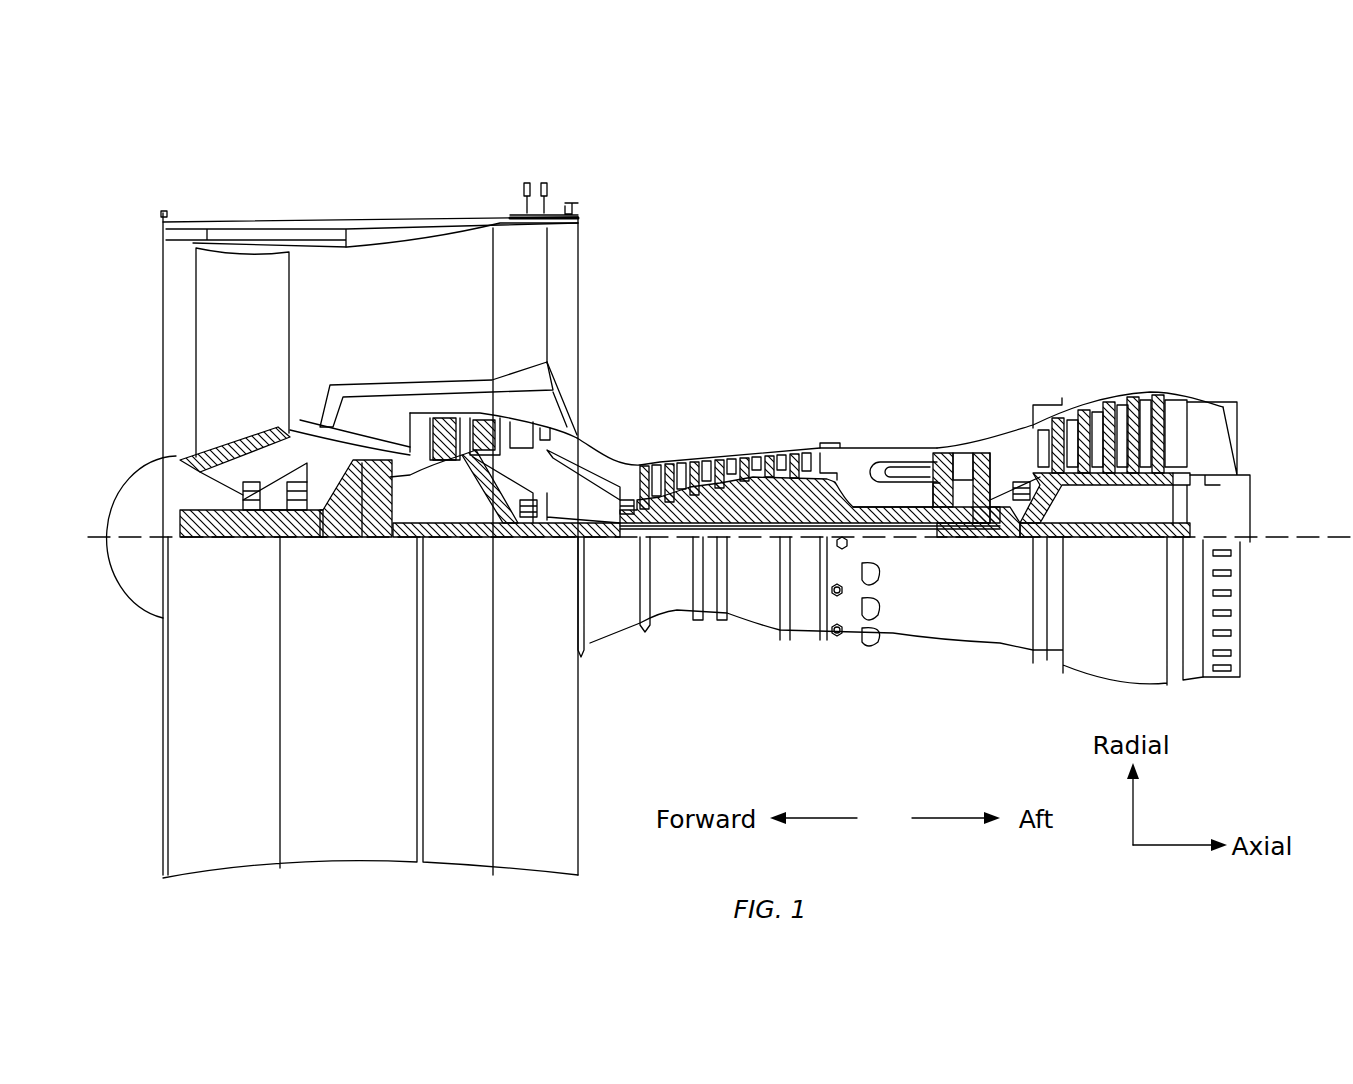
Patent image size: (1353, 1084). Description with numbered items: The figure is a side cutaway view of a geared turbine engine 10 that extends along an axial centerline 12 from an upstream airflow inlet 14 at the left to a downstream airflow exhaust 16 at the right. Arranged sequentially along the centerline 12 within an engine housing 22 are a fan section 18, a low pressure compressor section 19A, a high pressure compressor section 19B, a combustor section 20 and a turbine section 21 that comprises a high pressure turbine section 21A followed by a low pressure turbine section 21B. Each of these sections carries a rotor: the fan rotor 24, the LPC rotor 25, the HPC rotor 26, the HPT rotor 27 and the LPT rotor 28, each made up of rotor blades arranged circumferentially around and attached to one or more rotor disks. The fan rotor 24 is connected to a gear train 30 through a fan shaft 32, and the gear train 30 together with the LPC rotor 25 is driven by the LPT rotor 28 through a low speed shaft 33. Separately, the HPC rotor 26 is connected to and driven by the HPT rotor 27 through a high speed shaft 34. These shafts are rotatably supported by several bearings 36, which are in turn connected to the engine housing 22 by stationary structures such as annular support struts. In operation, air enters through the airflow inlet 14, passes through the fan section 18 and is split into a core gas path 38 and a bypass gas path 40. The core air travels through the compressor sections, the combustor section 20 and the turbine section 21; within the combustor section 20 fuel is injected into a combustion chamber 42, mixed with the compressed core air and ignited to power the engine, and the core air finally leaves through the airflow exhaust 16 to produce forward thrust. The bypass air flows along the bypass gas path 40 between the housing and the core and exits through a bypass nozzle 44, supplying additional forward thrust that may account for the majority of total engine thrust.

The geared turbine engine 10 is at (133, 203).
The axial centerline 12 is at (1300, 548).
The upstream airflow inlet 14 is at (163, 290).
The downstream airflow exhaust 16 is at (1240, 432).
The fan section 18 is at (337, 195).
The low pressure compressor (LPC) section 19A is at (580, 177).
The high pressure compressor (HPC) section 19B is at (605, 370).
The combustor section 20 is at (930, 370).
The turbine section 21 is at (935, 297).
The high pressure turbine (HPT) section 21A is at (935, 370).
The low pressure turbine (LPT) section 21B is at (1200, 370).
The engine housing 22 is at (597, 645).
The fan rotor 24 is at (176, 456).
The LPC rotor 25 is at (476, 482).
The HPC rotor 26 is at (747, 500).
The HPT rotor 27 is at (960, 515).
The LPT rotor 28 is at (1107, 482).
The gear train 30 is at (375, 540).
The fan shaft 32 is at (232, 540).
The low speed shaft 33 is at (800, 540).
The high speed shaft 34 is at (893, 507).
The bearings 36 is at (285, 530).
The core gas path 38 is at (600, 457).
The bypass gas path 40 is at (424, 311).
The combustion chamber 42 is at (890, 470).
The bypass nozzle 44 is at (578, 275).